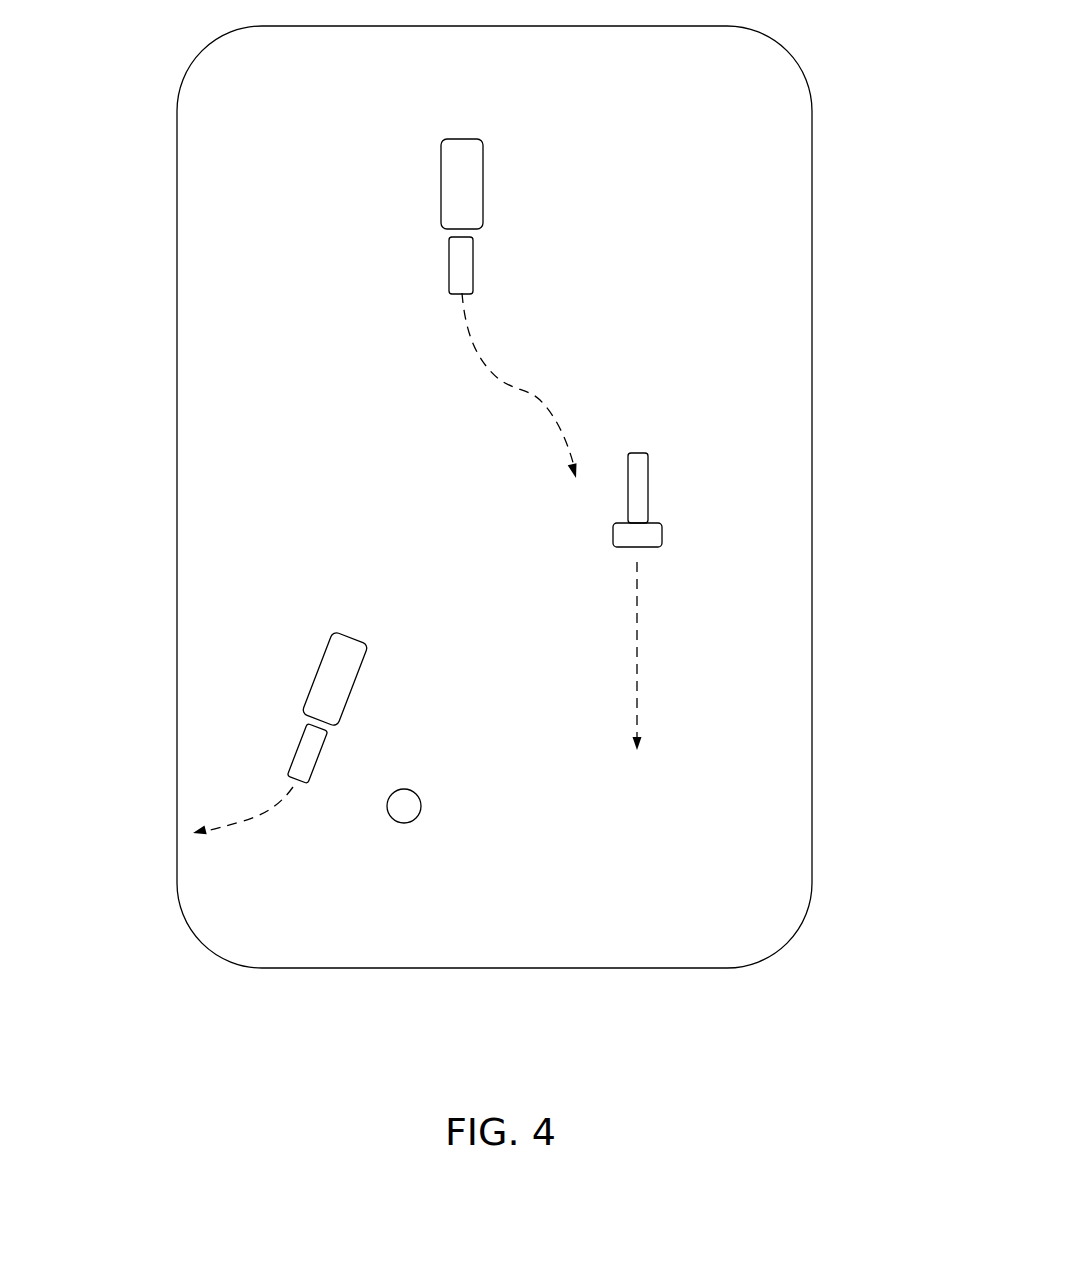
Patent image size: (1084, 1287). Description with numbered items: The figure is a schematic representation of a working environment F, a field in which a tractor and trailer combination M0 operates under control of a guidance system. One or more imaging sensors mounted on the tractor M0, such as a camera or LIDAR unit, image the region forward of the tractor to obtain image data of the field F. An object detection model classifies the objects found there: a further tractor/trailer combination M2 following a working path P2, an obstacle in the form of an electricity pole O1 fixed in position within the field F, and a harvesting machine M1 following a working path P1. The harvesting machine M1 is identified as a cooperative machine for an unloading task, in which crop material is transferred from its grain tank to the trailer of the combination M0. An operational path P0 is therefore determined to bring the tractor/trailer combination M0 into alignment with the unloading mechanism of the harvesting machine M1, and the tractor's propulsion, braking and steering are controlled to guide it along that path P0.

The working environment F is at (812, 615).
The tractor M0 is at (483, 190).
The harvesting machine M1 is at (648, 495).
The further tractor/trailer combination M2 is at (323, 655).
The operational path P0 is at (503, 383).
The working path P1 is at (637, 702).
The working path P2 is at (260, 818).
The electricity pole O1 is at (420, 817).